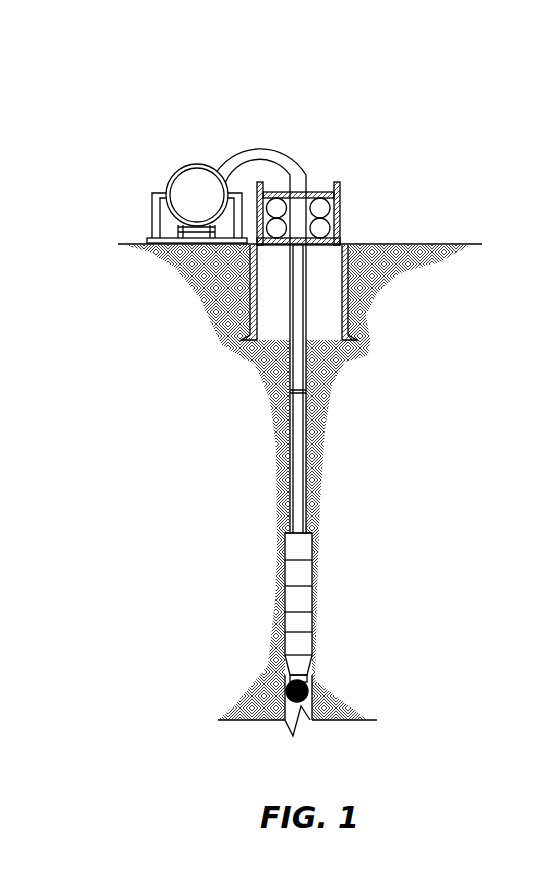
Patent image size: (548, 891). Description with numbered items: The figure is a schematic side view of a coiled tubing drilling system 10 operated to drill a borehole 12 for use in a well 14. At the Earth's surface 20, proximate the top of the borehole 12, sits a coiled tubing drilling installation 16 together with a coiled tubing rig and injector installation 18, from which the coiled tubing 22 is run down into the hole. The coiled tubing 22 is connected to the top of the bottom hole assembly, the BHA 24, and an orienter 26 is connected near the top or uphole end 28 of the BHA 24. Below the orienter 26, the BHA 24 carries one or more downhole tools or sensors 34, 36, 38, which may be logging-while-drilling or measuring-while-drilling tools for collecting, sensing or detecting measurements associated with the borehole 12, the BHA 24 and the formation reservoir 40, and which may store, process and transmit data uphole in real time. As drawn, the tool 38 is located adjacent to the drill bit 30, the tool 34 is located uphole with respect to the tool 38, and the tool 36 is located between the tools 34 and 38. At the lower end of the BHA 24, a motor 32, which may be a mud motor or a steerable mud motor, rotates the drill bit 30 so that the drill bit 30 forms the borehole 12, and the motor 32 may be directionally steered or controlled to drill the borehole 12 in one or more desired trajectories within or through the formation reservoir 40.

The coiled tubing drilling system 10 is at (171, 51).
The borehole 12 is at (313, 490).
The well 14 is at (346, 214).
The coiled tubing drilling installation 16 is at (177, 163).
The coiled tubing rig and injector installation 18 is at (152, 218).
The surface 20 is at (432, 244).
The coiled tubing 22 is at (307, 432).
The BHA 24 is at (295, 586).
The orienter 26 is at (283, 548).
The uphole end 28 is at (297, 560).
The drill bit 30 is at (291, 687).
The motor 32 is at (307, 668).
The downhole tool 34 is at (305, 573).
The downhole tool 36 is at (305, 600).
The downhole tool 38 is at (305, 622).
The formation reservoir 40 is at (178, 263).